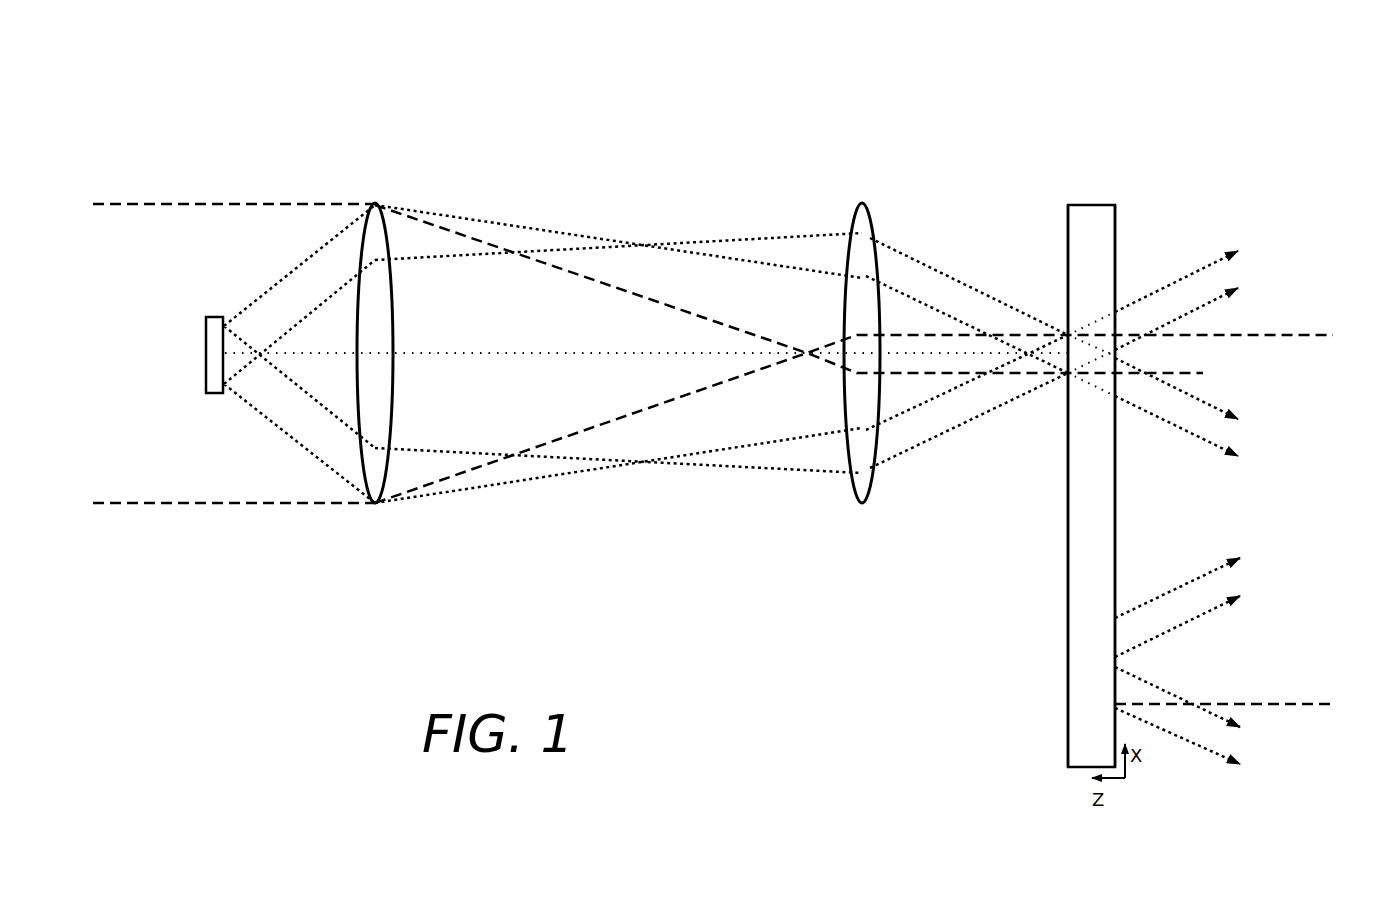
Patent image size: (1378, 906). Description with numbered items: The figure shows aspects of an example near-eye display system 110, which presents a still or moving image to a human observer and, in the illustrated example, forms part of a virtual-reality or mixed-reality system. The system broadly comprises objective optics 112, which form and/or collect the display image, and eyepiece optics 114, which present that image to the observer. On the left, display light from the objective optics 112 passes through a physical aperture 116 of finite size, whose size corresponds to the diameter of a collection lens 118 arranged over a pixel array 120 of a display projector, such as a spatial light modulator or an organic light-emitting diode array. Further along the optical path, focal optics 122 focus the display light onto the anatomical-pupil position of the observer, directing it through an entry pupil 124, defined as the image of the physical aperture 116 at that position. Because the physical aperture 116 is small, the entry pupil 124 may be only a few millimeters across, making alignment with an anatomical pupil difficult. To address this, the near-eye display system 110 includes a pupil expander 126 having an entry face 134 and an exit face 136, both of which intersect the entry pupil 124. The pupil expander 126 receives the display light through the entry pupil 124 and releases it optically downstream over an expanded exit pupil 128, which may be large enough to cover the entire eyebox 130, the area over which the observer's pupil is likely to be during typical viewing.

The near-eye display system 110 is at (198, 88).
The objective optics 112 is at (620, 187).
The eyepiece optics 114 is at (615, 520).
The physical aperture 116 is at (131, 206).
The collection lens 118 is at (393, 300).
The pixel array 120 is at (215, 394).
The focal optics 122 is at (845, 300).
The entry pupil 124 is at (1204, 316).
The pupil expander 126 is at (1090, 205).
The exit pupil 128 is at (1265, 337).
The eyebox 130 is at (1325, 337).
The entry face 134 is at (1068, 520).
The exit face 136 is at (1115, 522).